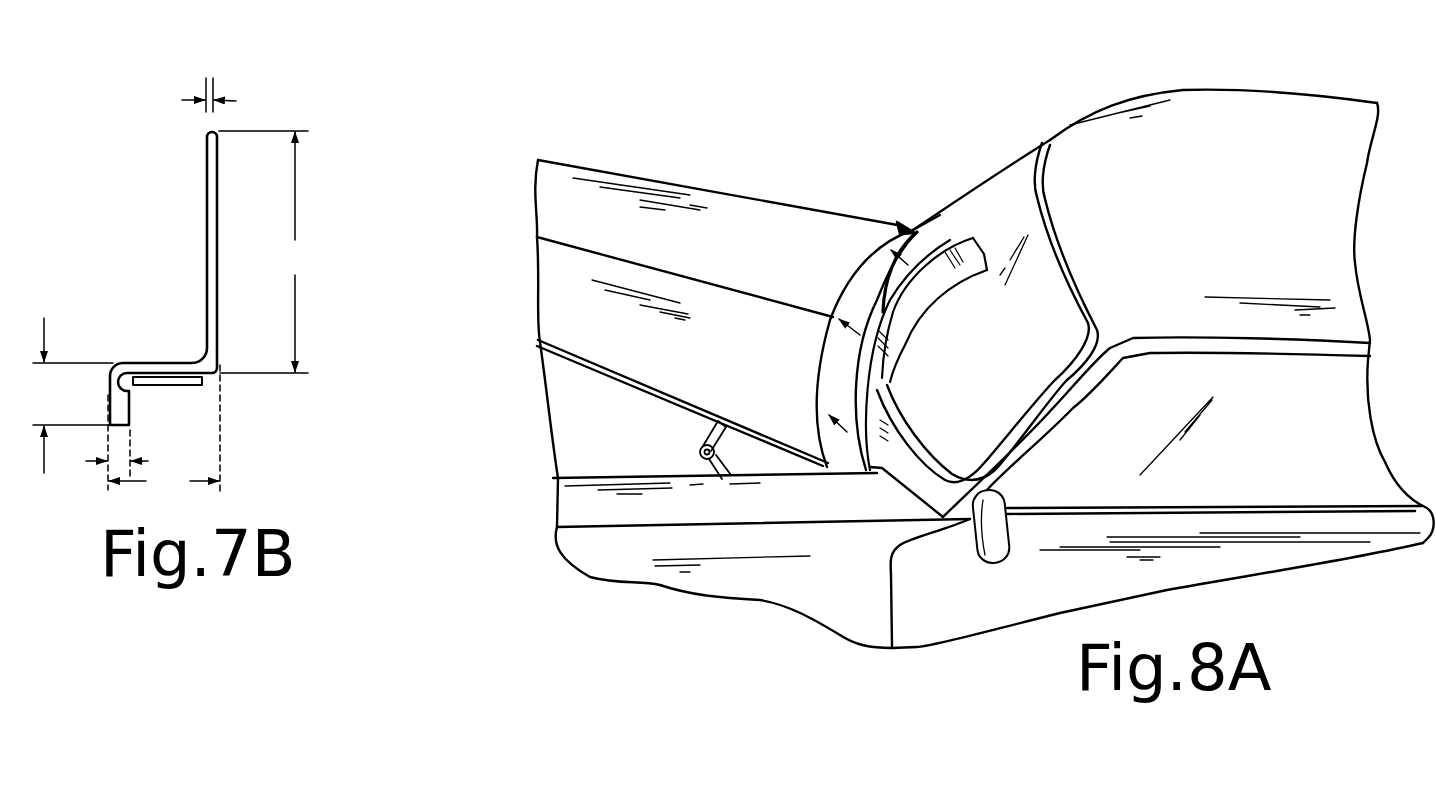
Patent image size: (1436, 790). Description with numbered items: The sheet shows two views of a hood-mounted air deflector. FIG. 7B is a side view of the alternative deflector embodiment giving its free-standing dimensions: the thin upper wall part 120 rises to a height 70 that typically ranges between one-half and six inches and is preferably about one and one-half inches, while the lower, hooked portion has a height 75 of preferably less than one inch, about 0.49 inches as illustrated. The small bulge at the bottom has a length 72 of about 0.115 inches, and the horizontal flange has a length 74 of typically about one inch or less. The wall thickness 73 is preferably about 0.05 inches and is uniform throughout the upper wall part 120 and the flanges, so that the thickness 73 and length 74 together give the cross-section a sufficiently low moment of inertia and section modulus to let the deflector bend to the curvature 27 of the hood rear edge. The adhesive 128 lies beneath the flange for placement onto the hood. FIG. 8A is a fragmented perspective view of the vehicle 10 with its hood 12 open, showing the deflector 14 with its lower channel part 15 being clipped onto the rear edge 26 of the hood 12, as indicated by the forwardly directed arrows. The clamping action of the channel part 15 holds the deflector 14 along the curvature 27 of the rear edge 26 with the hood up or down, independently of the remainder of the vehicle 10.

In FIG. 8A, the motor vehicle 10 is at (1197, 150).
In FIG. 8A, the hood 12 is at (762, 225).
In FIG. 8A, the deflector 14 is at (919, 298).
In FIG. 8A, the lower channel part 15 is at (868, 477).
In FIG. 8A, the rear edge 26 is at (818, 378).
In FIG. 8A, the concave curvature 27 is at (852, 294).
In FIG. 7B, the height 70 is at (269, 252).
In FIG. 7B, the length 72 is at (99, 442).
In FIG. 7B, the thickness 73 is at (258, 84).
In FIG. 7B, the length 74 is at (164, 430).
In FIG. 7B, the height 75 is at (73, 395).
In FIG. 7B, the upper wall part 120 is at (207, 198).
In FIG. 7B, the adhesive 128 is at (185, 385).